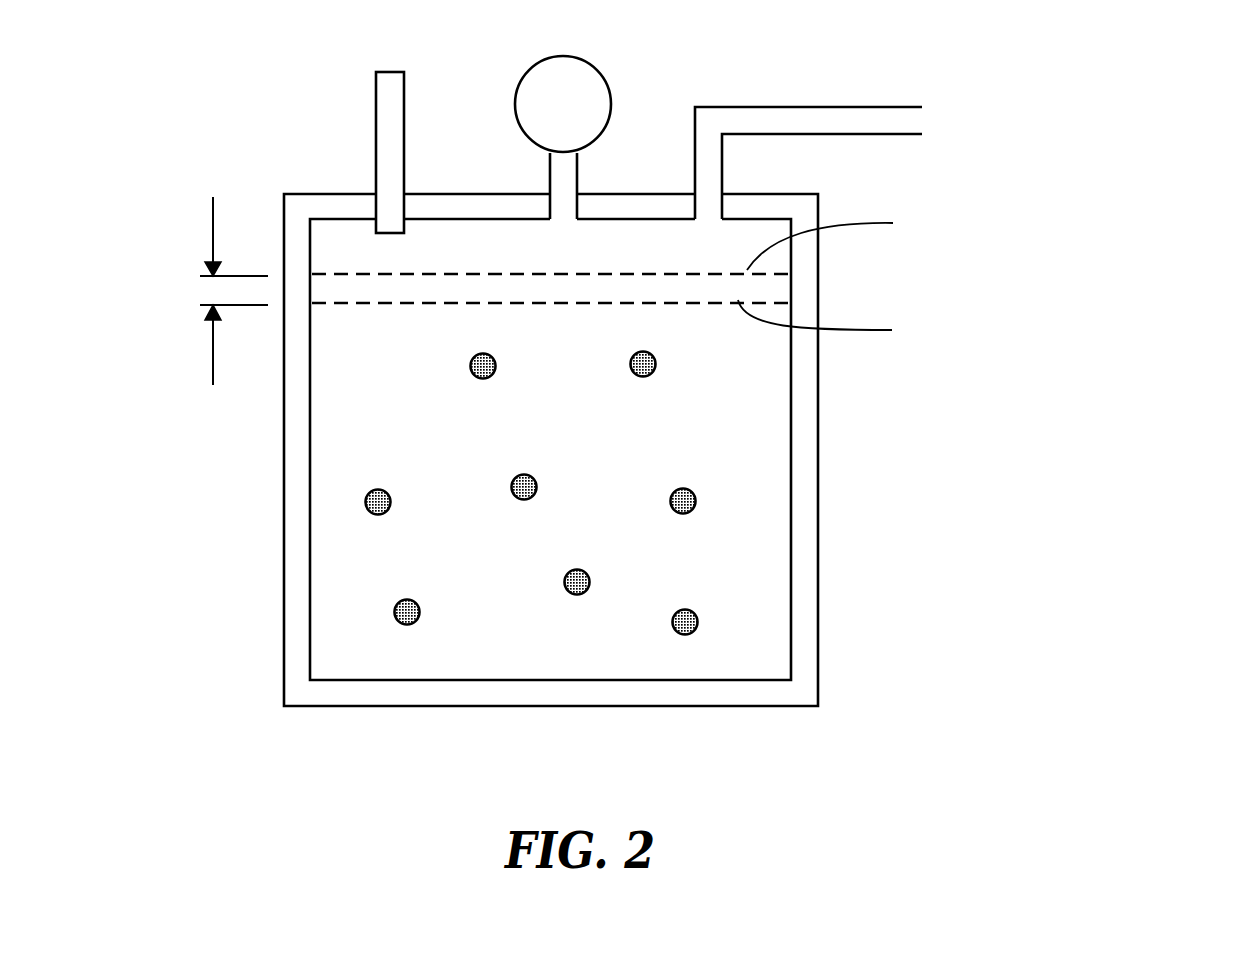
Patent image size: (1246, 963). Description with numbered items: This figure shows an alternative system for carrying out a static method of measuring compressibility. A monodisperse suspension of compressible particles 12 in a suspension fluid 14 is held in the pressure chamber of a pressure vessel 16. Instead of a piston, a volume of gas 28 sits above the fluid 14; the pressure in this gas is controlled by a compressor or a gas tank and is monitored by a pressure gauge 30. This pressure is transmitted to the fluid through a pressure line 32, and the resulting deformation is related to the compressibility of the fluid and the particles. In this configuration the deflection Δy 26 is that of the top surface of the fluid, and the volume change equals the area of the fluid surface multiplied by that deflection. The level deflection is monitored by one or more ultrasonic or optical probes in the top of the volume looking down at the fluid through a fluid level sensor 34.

The compressible particles 12 is at (697, 497).
The suspension fluid 14 is at (753, 415).
The pressure vessel 16 is at (820, 600).
The deflection Δy 26 is at (177, 304).
The volume of gas 28 is at (643, 242).
The pressure gauge 30 is at (597, 63).
The pressure line 32 is at (908, 118).
The fluid level sensor 34 is at (392, 117).